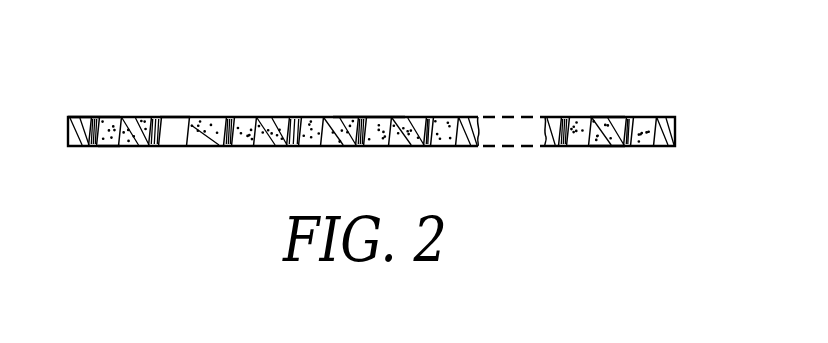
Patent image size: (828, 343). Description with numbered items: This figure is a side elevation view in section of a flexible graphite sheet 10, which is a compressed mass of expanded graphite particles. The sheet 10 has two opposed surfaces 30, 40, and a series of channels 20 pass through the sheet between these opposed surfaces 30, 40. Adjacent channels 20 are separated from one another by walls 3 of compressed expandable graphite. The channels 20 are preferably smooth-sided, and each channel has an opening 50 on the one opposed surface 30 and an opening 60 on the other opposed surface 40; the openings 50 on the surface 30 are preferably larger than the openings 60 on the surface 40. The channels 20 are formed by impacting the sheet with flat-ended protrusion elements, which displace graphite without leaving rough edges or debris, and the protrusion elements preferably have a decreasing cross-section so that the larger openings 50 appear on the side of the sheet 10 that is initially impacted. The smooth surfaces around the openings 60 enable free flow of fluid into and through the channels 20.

The flexible graphite sheet 10 is at (645, 101).
The channels 20 is at (95, 114).
The openings 50 is at (175, 116).
The walls 3 is at (405, 117).
The opposed surface 30 is at (602, 116).
The opposed surface 40 is at (600, 147).
The openings 60 is at (105, 147).